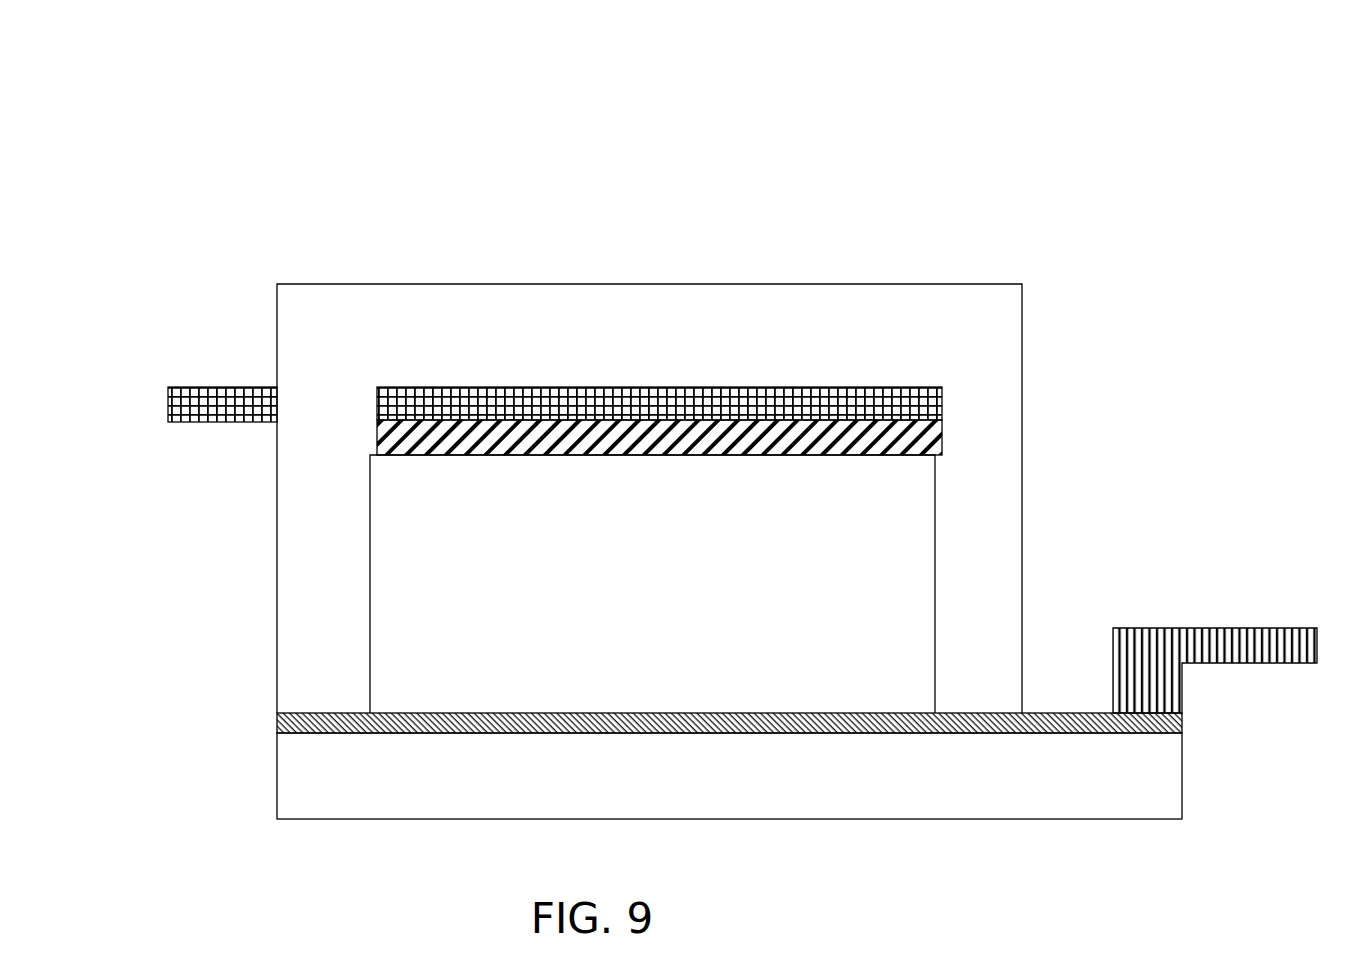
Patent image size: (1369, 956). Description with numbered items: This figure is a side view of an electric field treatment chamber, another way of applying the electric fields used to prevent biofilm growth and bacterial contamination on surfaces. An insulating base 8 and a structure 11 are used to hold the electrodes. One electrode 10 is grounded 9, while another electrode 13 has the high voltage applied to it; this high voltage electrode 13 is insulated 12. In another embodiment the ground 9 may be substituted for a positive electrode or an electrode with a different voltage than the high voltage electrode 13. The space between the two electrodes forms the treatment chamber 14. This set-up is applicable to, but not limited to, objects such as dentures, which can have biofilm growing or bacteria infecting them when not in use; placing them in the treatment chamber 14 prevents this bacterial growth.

The insulating base 8 is at (1175, 767).
The ground 9 is at (1243, 628).
The grounded electrode 10 is at (1052, 712).
The structure 11 is at (953, 337).
The insulation 12 is at (648, 435).
The high voltage electrode 13 is at (525, 400).
The treatment chamber 14 is at (528, 610).